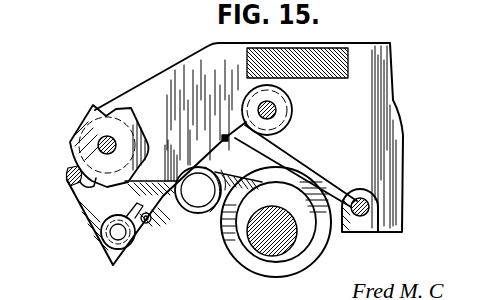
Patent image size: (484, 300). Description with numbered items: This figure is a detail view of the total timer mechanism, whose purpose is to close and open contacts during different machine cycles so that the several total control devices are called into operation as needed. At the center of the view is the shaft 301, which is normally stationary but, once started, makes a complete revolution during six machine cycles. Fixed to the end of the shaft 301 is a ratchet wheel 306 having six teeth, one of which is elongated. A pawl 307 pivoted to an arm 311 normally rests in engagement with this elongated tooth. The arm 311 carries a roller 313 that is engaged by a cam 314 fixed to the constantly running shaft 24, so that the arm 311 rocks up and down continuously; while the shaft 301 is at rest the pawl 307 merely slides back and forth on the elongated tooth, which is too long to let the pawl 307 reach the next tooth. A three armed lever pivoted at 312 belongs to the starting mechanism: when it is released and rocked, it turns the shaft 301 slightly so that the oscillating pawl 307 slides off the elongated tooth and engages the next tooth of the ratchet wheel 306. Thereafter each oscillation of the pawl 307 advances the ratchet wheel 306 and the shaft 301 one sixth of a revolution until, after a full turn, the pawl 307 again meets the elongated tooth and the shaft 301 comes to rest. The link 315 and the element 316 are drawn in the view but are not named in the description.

The constantly running shaft 24 is at (277, 247).
The shaft 301 is at (100, 140).
The ratchet wheel 306 is at (113, 118).
The pawl 307 is at (70, 175).
The arm 311 is at (163, 218).
The pivot of three armed lever 312 is at (277, 110).
The roller 313 is at (197, 214).
The cam 314 is at (325, 243).
The link 315 is at (290, 152).
The lip 316 is at (78, 168).